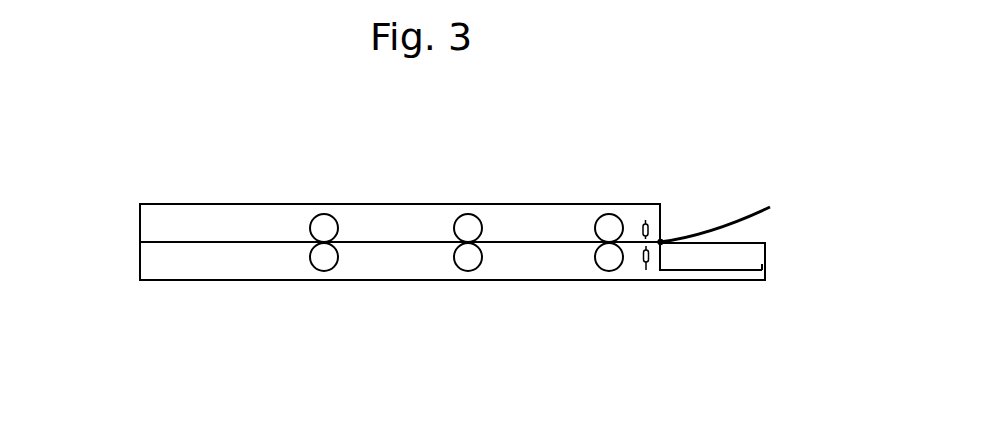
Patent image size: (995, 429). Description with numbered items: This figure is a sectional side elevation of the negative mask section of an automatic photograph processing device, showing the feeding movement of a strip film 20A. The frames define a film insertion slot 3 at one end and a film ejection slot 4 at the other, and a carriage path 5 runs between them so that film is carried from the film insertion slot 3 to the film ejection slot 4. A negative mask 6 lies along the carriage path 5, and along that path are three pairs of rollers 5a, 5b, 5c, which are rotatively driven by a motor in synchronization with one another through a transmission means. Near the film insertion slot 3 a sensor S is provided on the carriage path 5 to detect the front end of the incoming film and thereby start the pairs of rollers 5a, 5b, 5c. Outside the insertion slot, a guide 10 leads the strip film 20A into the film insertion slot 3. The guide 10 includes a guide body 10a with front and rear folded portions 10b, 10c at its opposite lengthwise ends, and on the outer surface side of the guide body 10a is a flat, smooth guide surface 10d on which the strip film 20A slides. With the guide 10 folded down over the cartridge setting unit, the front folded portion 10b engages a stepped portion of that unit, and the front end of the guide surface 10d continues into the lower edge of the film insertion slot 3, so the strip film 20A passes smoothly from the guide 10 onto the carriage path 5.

The film insertion slot 3 is at (661, 242).
The film ejection slot 4 is at (139, 242).
The carriage path 5 is at (518, 241).
The pair of rollers 5a is at (614, 262).
The pair of rollers 5b is at (472, 262).
The pair of rollers 5c is at (329, 262).
The negative mask 6 is at (368, 233).
The sensor S is at (648, 233).
The guide 10 is at (766, 301).
The guide body 10a is at (712, 243).
The front folded portion 10b is at (662, 245).
The rear folded portion 10c is at (763, 260).
The guide surface 10d is at (740, 238).
The strip film 20A is at (703, 230).